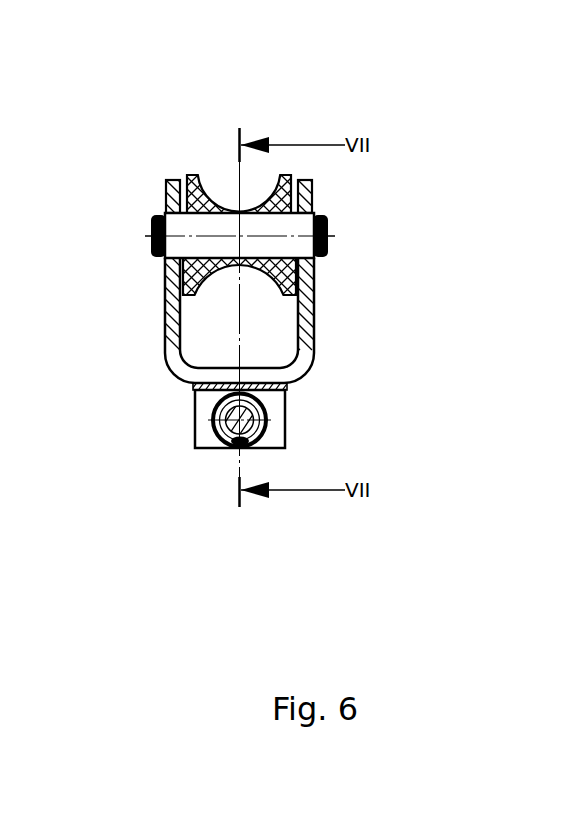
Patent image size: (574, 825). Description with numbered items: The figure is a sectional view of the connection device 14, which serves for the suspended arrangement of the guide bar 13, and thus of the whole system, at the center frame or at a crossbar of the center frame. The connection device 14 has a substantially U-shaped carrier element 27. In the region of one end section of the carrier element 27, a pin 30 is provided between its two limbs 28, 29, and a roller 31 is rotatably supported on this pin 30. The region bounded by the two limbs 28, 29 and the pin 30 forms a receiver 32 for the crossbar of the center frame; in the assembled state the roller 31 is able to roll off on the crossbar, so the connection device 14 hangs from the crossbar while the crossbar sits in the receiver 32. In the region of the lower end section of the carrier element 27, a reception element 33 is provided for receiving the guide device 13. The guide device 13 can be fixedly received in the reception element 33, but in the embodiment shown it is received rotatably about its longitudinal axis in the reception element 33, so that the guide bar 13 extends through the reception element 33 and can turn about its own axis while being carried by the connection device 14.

The connection device 14 is at (117, 84).
The guide bar 13 is at (213, 423).
The carrier element 27 is at (150, 338).
The limb 28 is at (153, 285).
The limb 29 is at (283, 323).
The pin 30 is at (152, 223).
The roller 31 is at (165, 197).
The receiver 32 is at (212, 343).
The reception element 33 is at (185, 412).